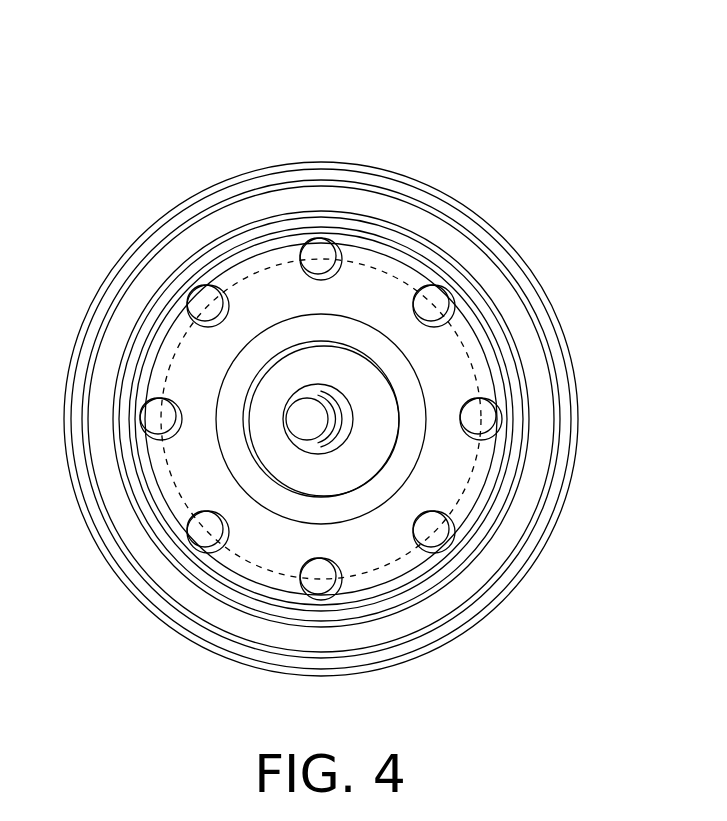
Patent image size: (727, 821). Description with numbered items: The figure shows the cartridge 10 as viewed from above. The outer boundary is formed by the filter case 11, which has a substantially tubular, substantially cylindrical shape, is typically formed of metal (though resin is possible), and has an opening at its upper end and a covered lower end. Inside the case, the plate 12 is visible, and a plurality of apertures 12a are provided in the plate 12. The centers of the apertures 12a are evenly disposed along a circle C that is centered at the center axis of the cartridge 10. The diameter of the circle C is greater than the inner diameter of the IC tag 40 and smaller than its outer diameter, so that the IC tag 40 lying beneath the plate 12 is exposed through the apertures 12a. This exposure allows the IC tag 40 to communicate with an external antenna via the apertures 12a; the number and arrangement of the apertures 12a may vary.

The cartridge 10 is at (591, 34).
The filter case 11 is at (548, 288).
The plate 12 is at (390, 270).
The apertures 12a is at (482, 438).
The IC tag 40 is at (207, 542).
The circle C is at (172, 353).